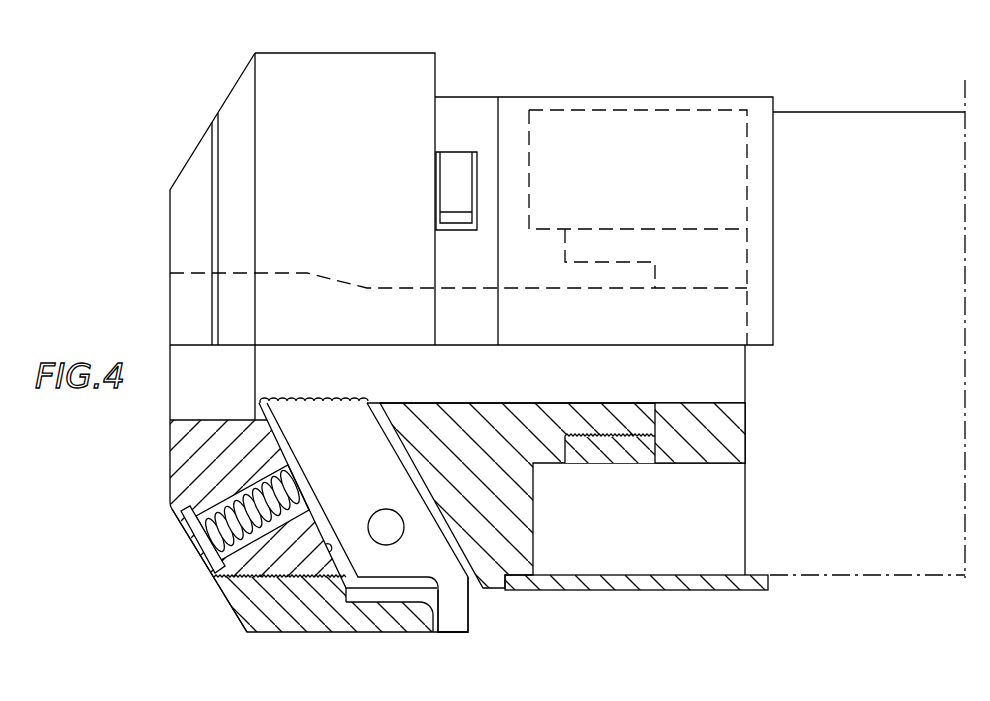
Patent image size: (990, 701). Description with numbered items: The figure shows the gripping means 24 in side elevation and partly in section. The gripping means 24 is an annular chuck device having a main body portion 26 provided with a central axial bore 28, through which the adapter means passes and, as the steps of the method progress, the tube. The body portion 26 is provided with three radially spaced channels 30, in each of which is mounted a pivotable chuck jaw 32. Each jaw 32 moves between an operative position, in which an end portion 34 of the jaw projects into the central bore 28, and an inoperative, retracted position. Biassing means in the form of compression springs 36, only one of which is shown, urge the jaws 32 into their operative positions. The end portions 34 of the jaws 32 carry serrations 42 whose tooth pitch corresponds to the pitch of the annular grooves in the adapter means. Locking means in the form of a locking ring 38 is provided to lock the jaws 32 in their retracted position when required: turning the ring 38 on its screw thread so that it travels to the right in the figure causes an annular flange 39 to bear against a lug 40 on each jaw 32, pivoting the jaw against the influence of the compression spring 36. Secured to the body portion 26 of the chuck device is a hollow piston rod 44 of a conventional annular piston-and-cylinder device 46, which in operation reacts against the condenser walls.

The gripping means 24 is at (487, 87).
The main body portion 26 is at (198, 162).
The central axial bore 28 is at (170, 277).
The channel 30 is at (328, 575).
The chuck jaw 32 is at (340, 437).
The end portion 34 is at (337, 62).
The compression spring 36 is at (248, 520).
The locking ring 38 is at (260, 607).
The annular flange 39 is at (427, 622).
The lug 40 is at (452, 165).
The serrations 42 is at (268, 402).
The hollow piston rod 44 is at (673, 443).
The annular piston-and-cylinder device 46 is at (841, 380).